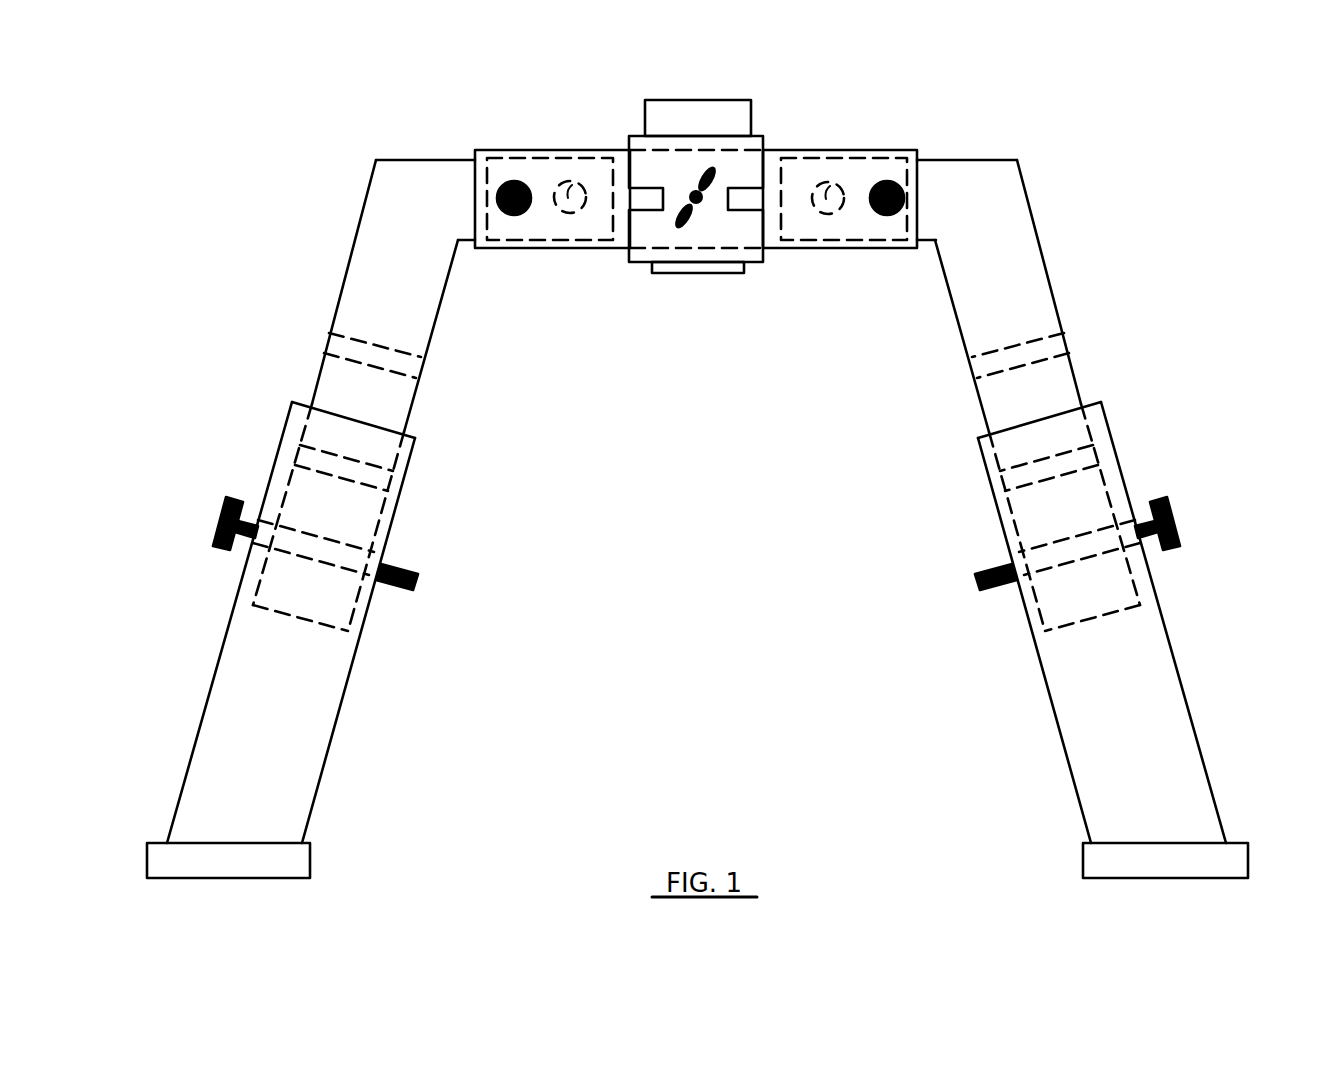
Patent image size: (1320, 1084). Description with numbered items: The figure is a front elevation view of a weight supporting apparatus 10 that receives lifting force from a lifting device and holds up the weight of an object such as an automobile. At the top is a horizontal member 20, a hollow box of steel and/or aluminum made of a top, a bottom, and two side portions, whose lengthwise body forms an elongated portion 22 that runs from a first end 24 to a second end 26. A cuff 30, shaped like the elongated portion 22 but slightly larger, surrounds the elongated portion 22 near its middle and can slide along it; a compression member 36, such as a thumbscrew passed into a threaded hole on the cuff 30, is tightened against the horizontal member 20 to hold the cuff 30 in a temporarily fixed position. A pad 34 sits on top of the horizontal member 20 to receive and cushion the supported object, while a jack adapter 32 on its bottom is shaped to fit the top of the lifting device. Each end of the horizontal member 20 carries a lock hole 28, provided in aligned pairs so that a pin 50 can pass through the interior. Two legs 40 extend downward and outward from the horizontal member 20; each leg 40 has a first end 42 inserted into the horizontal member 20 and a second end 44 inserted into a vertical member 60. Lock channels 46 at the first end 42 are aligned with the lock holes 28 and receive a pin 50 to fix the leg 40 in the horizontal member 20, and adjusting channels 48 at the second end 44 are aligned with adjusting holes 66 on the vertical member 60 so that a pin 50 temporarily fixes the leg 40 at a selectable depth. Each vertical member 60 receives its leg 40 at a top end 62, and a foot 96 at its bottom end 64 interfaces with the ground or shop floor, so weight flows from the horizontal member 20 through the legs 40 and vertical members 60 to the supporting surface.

The weight supporting apparatus 10 is at (1115, 232).
The horizontal member 20 is at (743, 237).
The elongated portion 22 is at (613, 245).
The first end 24 is at (488, 188).
The second end 26 is at (907, 217).
The lock hole 28 is at (515, 216).
The cuff 30 is at (738, 167).
The jack adapter 32 is at (670, 263).
The pad 34 is at (660, 118).
The compression member 36 is at (697, 207).
The leg 40 is at (432, 280).
The first end 42 is at (438, 172).
The second end 44 is at (335, 643).
The lock channel 46 is at (500, 188).
The adjusting channel 48 is at (425, 392).
The pin 50 is at (522, 212).
The vertical member 60 is at (228, 712).
The top end 62 is at (415, 455).
The bottom end 64 is at (282, 790).
The adjusting hole 66 is at (258, 528).
The foot 96 is at (303, 861).